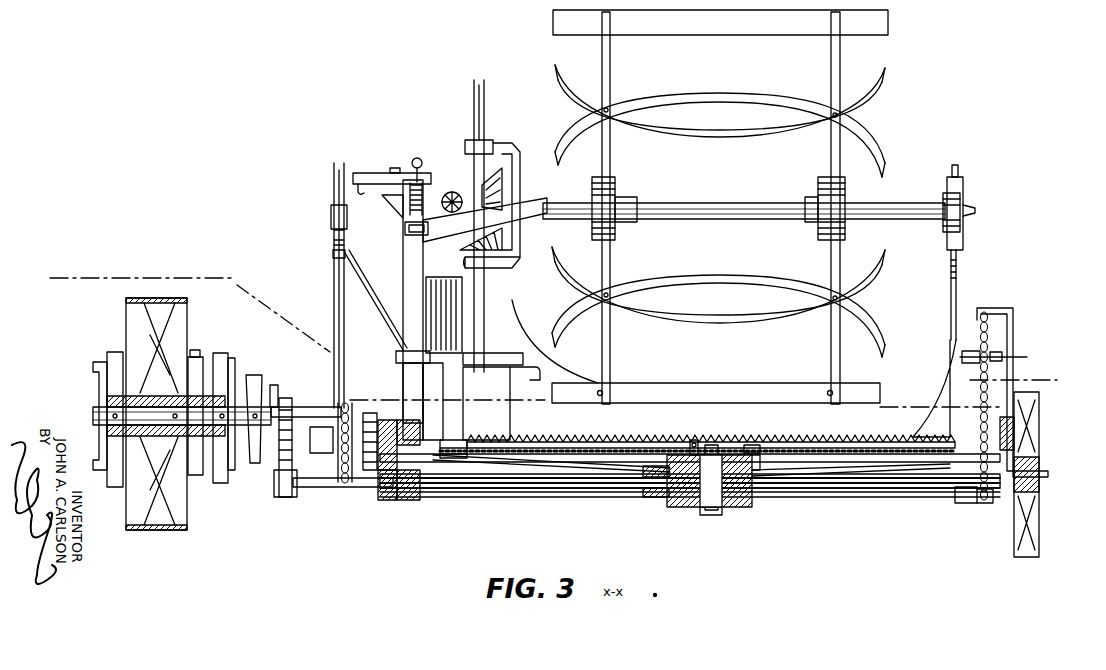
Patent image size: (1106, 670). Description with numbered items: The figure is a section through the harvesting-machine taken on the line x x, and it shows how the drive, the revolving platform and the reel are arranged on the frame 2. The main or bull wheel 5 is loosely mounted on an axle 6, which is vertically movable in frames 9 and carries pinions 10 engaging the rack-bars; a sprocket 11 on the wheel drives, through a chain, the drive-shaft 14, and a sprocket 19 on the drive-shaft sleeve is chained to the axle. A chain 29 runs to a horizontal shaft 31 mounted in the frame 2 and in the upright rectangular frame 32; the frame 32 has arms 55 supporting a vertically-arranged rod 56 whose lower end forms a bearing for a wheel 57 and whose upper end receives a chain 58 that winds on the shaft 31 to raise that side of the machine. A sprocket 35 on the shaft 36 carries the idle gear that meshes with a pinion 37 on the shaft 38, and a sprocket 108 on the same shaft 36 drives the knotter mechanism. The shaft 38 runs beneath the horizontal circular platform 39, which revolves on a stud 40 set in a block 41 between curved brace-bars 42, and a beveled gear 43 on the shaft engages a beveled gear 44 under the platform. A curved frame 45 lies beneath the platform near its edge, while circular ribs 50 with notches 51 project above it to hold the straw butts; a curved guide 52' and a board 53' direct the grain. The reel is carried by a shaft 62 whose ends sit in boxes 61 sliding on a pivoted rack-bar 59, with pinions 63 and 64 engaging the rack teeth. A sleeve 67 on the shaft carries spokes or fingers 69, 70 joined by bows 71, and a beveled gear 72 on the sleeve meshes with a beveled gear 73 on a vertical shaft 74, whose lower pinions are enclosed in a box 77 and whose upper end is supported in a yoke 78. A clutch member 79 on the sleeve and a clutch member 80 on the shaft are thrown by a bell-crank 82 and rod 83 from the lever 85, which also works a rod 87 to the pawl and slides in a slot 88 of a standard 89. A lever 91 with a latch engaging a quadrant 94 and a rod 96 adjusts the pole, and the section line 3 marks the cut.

The frame 2 is at (945, 495).
The section line 3 is at (552, 334).
The main or bull wheel 5 is at (172, 313).
The axle 6 is at (105, 415).
The frames 9 is at (100, 375).
The pinions 10 is at (110, 400).
The sprocket 11 is at (200, 365).
The drive-shaft 14 is at (432, 440).
The sprocket 19 is at (300, 400).
The chain 29 is at (280, 462).
The horizontal shaft 31 is at (335, 487).
The upright rectangular frame 32 is at (1018, 352).
The sprocket 35 is at (370, 412).
The shaft 36 is at (312, 440).
The pinion 37 is at (385, 500).
The shaft 38 is at (470, 488).
The horizontal circular platform 39 is at (755, 447).
The stud 40 is at (705, 505).
The block 41 is at (745, 508).
The curved brace-bars 42 is at (575, 472).
The beveled gear 43 is at (665, 500).
The beveled gear 44 is at (752, 470).
The curved frame 45 is at (445, 465).
The circular ribs 50 is at (560, 440).
The notches 51 is at (500, 437).
The curved guide 52' is at (696, 351).
The board 53' is at (940, 393).
The arms 55 is at (965, 505).
The vertically-arranged rod 56 is at (1015, 318).
The wheel 57 is at (1040, 430).
The chain 58 is at (990, 378).
The rack-bar 59 is at (960, 282).
The boxes 61 is at (965, 188).
The shaft 62 is at (978, 210).
The pinion 63 is at (942, 200).
The pinion 64 is at (416, 180).
The sleeve 67 is at (722, 214).
The spokes or fingers 69 is at (611, 262).
The spokes or fingers 70 is at (838, 262).
The bows 71 is at (707, 130).
The beveled gear 72 is at (505, 200).
The beveled gear 73 is at (465, 250).
The vertical shaft 74 is at (468, 305).
The box 77 is at (455, 408).
The yoke 78 is at (502, 145).
The clutch member 79 is at (484, 198).
The clutch member 80 is at (451, 192).
The bell-crank 82 is at (365, 172).
The rod 83 is at (353, 188).
The lever 85 is at (405, 258).
The rod 87 is at (414, 160).
The slot 88 is at (405, 236).
The standard 89 is at (402, 292).
The lever 91 is at (333, 255).
The quadrant 94 is at (343, 210).
The rod 96 is at (333, 318).
The sprocket 108 is at (345, 485).